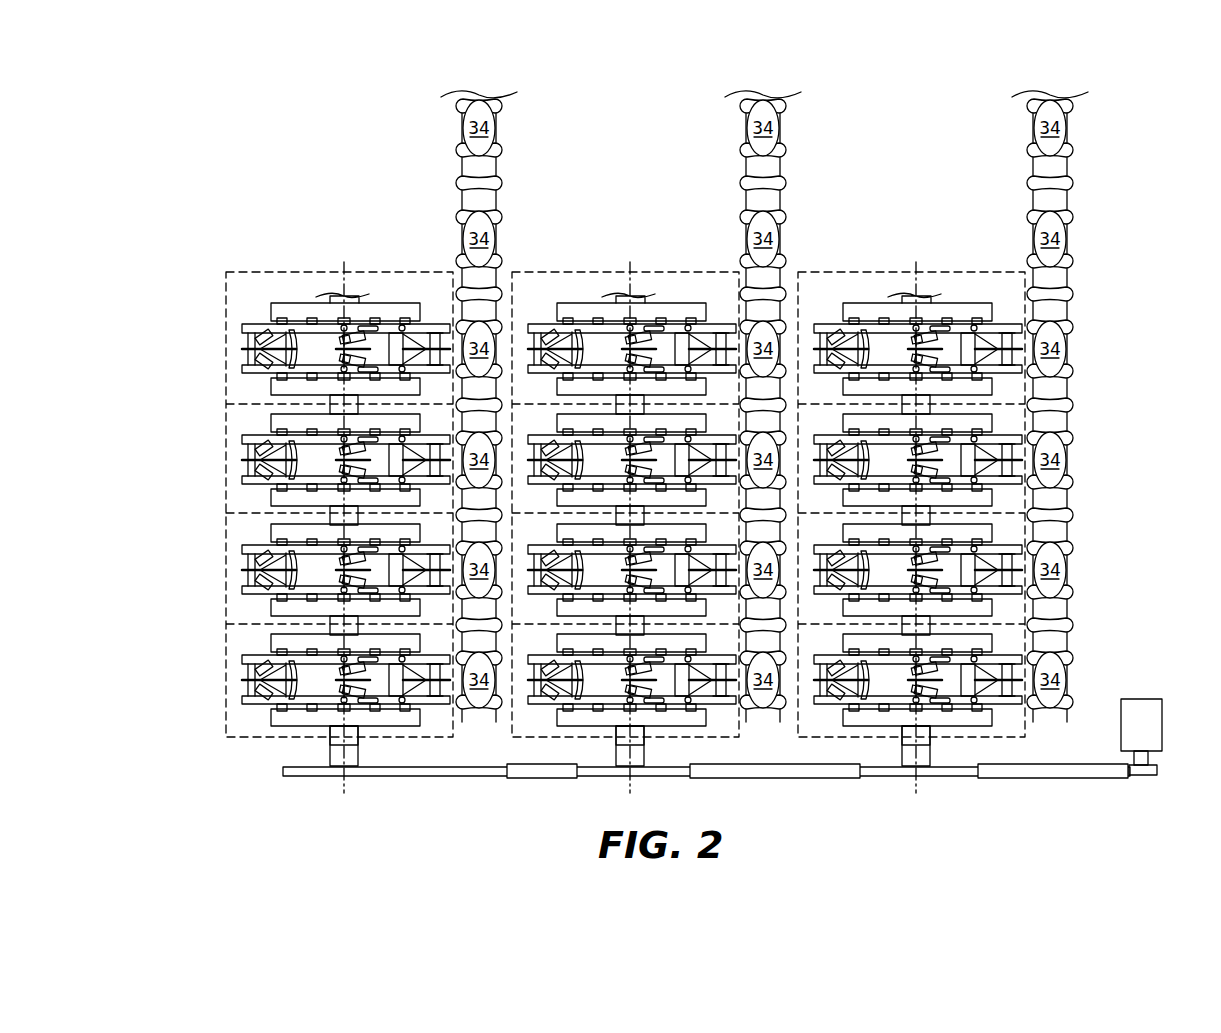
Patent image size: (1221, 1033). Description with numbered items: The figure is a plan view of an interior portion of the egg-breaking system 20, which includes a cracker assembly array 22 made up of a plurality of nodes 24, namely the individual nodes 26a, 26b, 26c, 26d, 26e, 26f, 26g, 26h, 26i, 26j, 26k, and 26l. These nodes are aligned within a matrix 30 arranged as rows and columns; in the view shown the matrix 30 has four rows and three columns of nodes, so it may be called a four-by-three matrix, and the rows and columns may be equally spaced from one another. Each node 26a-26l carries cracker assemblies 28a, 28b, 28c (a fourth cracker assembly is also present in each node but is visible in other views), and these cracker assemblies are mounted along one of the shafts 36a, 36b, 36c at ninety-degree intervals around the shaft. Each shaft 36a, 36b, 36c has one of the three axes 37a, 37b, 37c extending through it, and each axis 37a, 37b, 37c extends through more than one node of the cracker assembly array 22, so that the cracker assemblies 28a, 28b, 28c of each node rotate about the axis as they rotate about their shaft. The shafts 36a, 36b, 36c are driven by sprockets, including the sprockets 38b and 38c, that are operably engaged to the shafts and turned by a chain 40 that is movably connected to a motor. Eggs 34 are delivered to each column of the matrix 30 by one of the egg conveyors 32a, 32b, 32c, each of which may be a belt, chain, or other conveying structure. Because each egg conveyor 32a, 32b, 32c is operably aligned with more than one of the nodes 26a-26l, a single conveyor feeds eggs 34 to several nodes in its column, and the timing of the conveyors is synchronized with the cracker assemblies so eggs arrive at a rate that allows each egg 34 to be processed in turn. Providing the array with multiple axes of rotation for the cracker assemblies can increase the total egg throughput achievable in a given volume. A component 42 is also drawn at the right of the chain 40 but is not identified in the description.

The egg-breaking system 20 is at (200, 122).
The cracker assembly array 22 is at (203, 288).
The plurality of nodes 24 is at (905, 188).
The matrix 30 is at (633, 188).
The node 26a is at (226, 352).
The node 26b is at (226, 463).
The node 26c is at (226, 576).
The node 26d is at (226, 700).
The node 26e is at (548, 272).
The node 26f is at (514, 455).
The node 26g is at (514, 567).
The node 26h is at (520, 737).
The node 26i is at (960, 268).
The node 26j is at (1025, 497).
The node 26k is at (1025, 563).
The node 26l is at (1025, 737).
The cracker assembly 28a is at (247, 325).
The cracker assembly 28b is at (350, 338).
The cracker assembly 28c is at (430, 330).
The egg conveyor 32a is at (481, 94).
The egg conveyor 32b is at (765, 94).
The egg conveyor 32c is at (1050, 94).
The egg 34 is at (764, 404).
The shaft 36a is at (338, 757).
The shaft 36b is at (618, 755).
The shaft 36c is at (903, 757).
The axis 37a is at (340, 293).
The axis 37b is at (628, 294).
The axis 37c is at (914, 295).
The sprocket 38b is at (347, 795).
The sprocket 38c is at (920, 792).
The chain 40 is at (1020, 779).
The drive unit 42 is at (1163, 722).